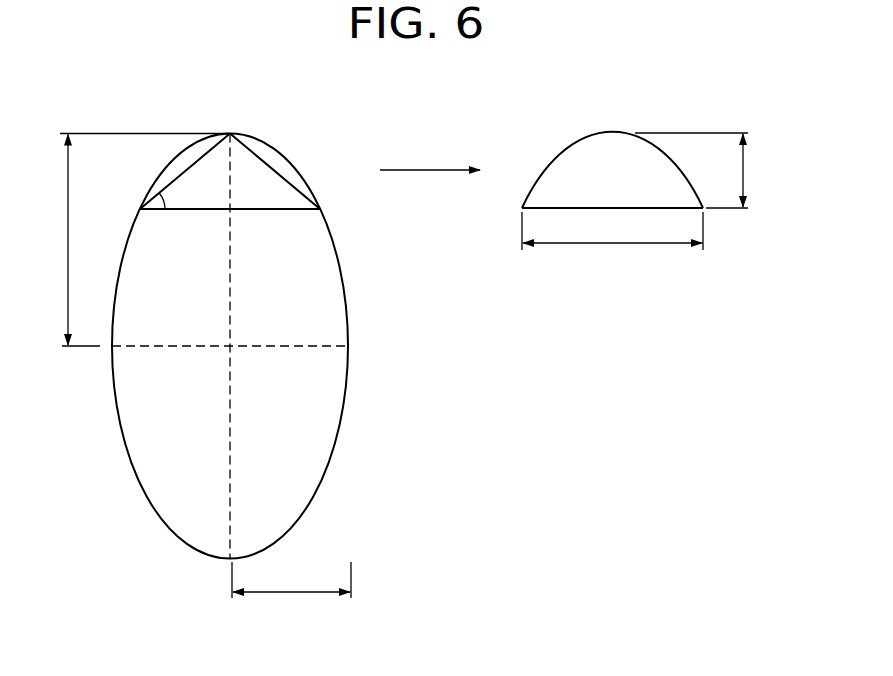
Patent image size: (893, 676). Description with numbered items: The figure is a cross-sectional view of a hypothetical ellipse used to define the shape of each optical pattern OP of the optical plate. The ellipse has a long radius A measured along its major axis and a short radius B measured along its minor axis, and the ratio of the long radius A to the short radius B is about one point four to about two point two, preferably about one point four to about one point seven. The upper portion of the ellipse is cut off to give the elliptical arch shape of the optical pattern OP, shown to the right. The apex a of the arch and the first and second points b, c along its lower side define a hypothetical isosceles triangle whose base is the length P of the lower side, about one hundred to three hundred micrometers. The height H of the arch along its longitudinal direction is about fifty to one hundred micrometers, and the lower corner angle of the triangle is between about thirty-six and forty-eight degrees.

The optical pattern OP is at (615, 127).
The apex of the elliptical arch shape a is at (230, 159).
The first point b is at (221, 201).
The second point c is at (327, 209).
The long radius A is at (132, 240).
The short radius B is at (291, 592).
The height of the elliptical arch shape H is at (700, 170).
The length of the lower side P is at (612, 242).